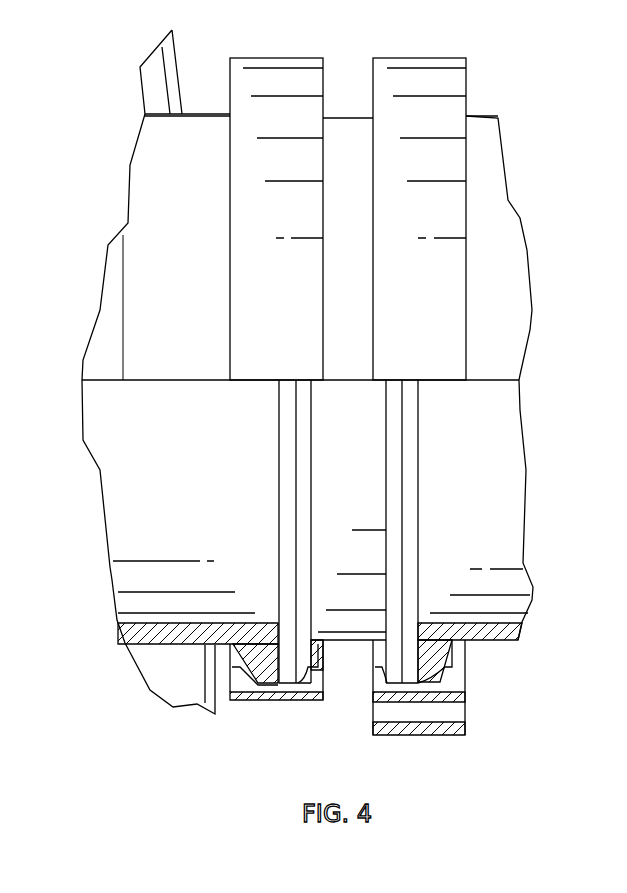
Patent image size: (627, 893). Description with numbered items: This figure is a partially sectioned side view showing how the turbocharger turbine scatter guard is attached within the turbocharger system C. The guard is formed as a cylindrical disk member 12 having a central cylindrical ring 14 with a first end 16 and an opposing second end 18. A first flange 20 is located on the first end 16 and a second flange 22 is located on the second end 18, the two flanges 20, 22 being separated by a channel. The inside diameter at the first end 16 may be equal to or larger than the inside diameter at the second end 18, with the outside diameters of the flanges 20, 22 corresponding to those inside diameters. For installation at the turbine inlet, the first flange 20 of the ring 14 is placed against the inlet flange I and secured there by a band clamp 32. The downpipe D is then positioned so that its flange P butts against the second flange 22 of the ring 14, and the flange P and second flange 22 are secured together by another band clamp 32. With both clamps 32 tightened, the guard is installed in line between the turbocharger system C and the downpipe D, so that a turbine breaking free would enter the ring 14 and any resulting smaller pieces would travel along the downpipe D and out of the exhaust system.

The cylindrical disk member 12 is at (355, 132).
The central cylindrical ring 14 is at (345, 127).
The first end 16 is at (278, 445).
The second end 18 is at (418, 455).
The first flange 20 is at (287, 520).
The second flange 22 is at (411, 524).
The band clamp 32 is at (282, 697).
The turbocharger system C is at (160, 273).
The downpipe D is at (512, 583).
The downpipe flange P is at (444, 660).
The inlet flange I is at (265, 673).